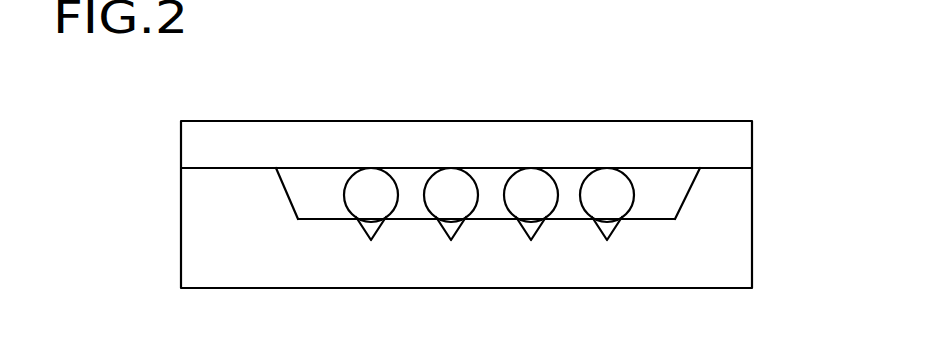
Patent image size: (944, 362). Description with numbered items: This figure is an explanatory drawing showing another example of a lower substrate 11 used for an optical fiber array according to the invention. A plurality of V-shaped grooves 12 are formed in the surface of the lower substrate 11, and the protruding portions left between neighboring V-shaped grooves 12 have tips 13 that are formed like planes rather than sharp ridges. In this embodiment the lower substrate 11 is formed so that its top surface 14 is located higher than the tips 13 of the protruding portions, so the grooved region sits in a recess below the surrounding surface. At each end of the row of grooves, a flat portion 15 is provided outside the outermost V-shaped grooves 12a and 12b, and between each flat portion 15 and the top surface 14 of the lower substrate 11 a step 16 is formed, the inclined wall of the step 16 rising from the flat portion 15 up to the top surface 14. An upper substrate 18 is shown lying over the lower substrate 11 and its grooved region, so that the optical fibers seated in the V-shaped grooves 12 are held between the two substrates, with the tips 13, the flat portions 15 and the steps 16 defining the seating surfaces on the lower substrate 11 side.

The lower substrate 11 is at (195, 239).
The V-shaped grooves 12 is at (438, 222).
The V-shaped groove at one end 12a is at (632, 222).
The V-shaped groove at the other end 12b is at (358, 222).
The tips of protruding portions 13 is at (487, 219).
The top surface 14 is at (725, 168).
The flat portion 15 is at (310, 220).
The step 16 is at (287, 192).
The upper substrate 18 is at (708, 142).